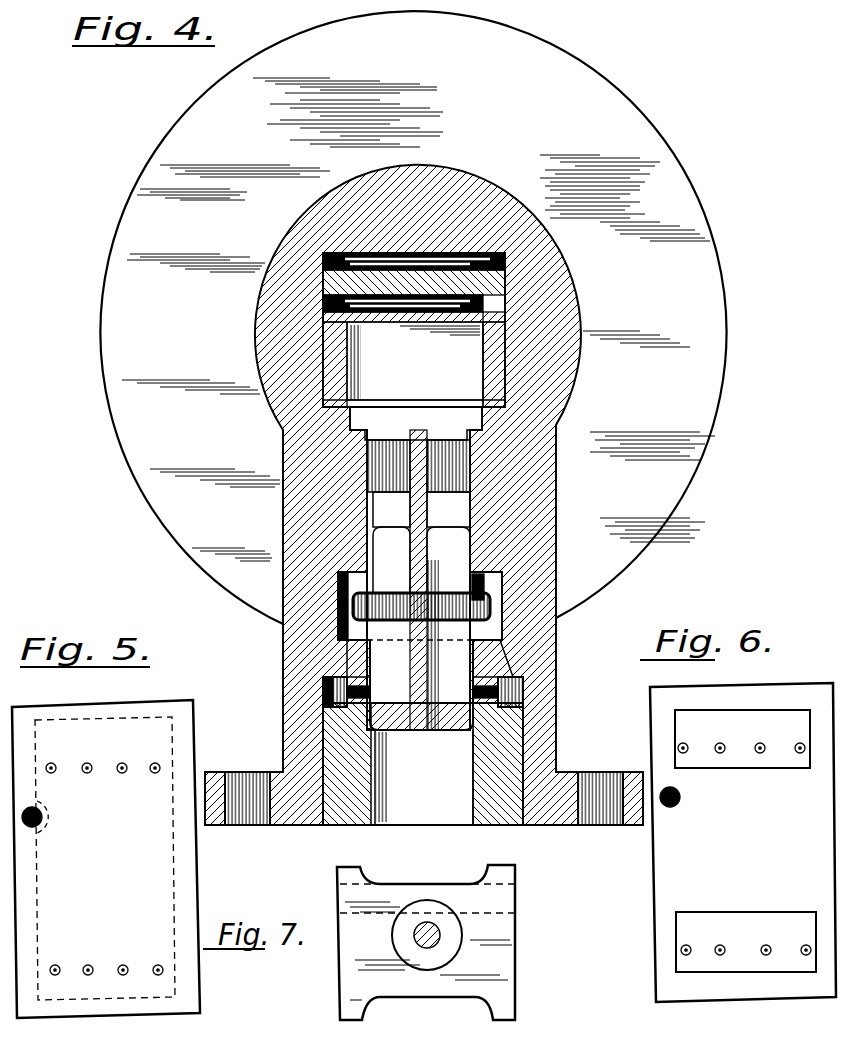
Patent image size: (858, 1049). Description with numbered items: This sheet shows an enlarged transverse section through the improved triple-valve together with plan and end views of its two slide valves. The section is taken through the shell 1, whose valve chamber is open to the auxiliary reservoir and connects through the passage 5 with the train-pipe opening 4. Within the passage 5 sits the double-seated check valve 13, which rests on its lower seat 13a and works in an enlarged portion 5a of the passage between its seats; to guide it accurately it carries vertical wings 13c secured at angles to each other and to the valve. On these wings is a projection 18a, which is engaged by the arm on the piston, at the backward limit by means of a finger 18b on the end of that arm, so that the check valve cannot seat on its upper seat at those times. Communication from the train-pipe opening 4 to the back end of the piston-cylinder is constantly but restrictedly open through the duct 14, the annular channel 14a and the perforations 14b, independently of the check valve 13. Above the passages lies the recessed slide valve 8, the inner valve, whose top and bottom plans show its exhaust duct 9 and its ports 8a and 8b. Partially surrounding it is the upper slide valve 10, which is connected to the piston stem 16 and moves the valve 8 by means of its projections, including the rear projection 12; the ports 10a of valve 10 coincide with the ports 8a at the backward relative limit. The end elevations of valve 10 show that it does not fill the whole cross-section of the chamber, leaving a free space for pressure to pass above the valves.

In FIG. 4, the shell 1 is at (422, 317).
In FIG. 4, the train-pipe opening 4 is at (423, 764).
In FIG. 4, the passage 5 is at (391, 509).
In FIG. 4, the enlarged portion 5a is at (345, 590).
In FIG. 5, the recessed slide valve 8 is at (106, 859).
In FIG. 6, the recessed slide valve 8 is at (743, 842).
In FIG. 5, the ports 8a is at (92, 965).
In FIG. 6, the ports 8a is at (691, 947).
In FIG. 5, the ports 8b is at (92, 763).
In FIG. 6, the ports 8b is at (725, 745).
In FIG. 4, the exhaust duct 9 is at (325, 262).
In FIG. 5, the exhaust duct 9 is at (45, 812).
In FIG. 6, the exhaust duct 9 is at (680, 800).
In FIG. 4, the valve 10 is at (505, 273).
In FIG. 7, the valve 10 is at (427, 898).
In FIG. 4, the ports 10a is at (400, 305).
In FIG. 7, the rear projection 12 is at (426, 942).
In FIG. 4, the double-seated check valve 13 is at (421, 606).
In FIG. 4, the lower seat 13a is at (430, 685).
In FIG. 4, the vertical wings 13c is at (421, 560).
In FIG. 4, the duct 14 is at (440, 700).
In FIG. 4, the annular channel 14a is at (323, 692).
In FIG. 4, the perforations 14b is at (422, 688).
In FIG. 7, the stem 16 is at (440, 935).
In FIG. 4, the projection 18a is at (418, 483).
In FIG. 4, the finger 18b is at (422, 442).